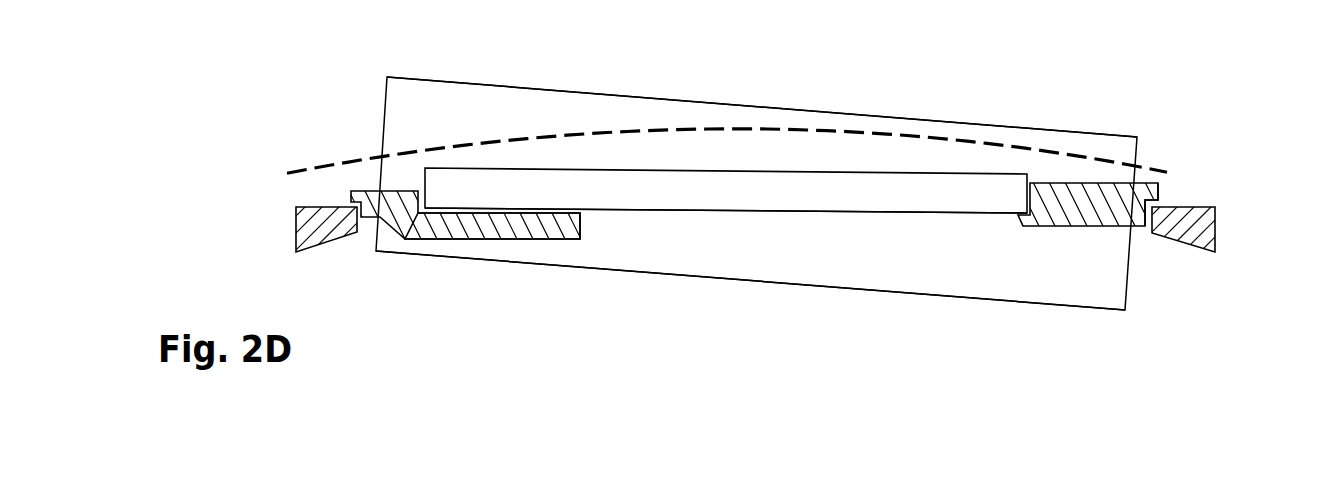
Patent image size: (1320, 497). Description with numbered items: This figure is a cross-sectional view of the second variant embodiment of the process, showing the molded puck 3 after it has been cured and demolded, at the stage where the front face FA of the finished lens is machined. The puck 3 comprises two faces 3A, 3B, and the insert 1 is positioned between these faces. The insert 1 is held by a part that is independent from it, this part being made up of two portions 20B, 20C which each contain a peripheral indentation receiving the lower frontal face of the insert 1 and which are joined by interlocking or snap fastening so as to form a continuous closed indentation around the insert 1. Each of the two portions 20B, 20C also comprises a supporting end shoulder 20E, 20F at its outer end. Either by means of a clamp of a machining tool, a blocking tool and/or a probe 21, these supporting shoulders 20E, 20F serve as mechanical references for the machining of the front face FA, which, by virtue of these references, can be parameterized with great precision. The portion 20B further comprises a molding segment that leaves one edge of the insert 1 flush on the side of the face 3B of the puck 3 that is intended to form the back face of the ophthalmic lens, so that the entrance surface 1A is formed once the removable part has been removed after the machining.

The insert 1 is at (769, 183).
The entrance surface 1A is at (543, 213).
The front face FA is at (568, 133).
The puck 3 is at (820, 294).
The face of the puck 3A is at (990, 124).
The face of the puck 3B is at (592, 268).
The portion of the part 20B is at (475, 228).
The portion of the part 20C is at (1063, 208).
The supporting end shoulder 20E is at (352, 197).
The supporting end shoulder 20F is at (1145, 193).
The probe 21 is at (323, 245).